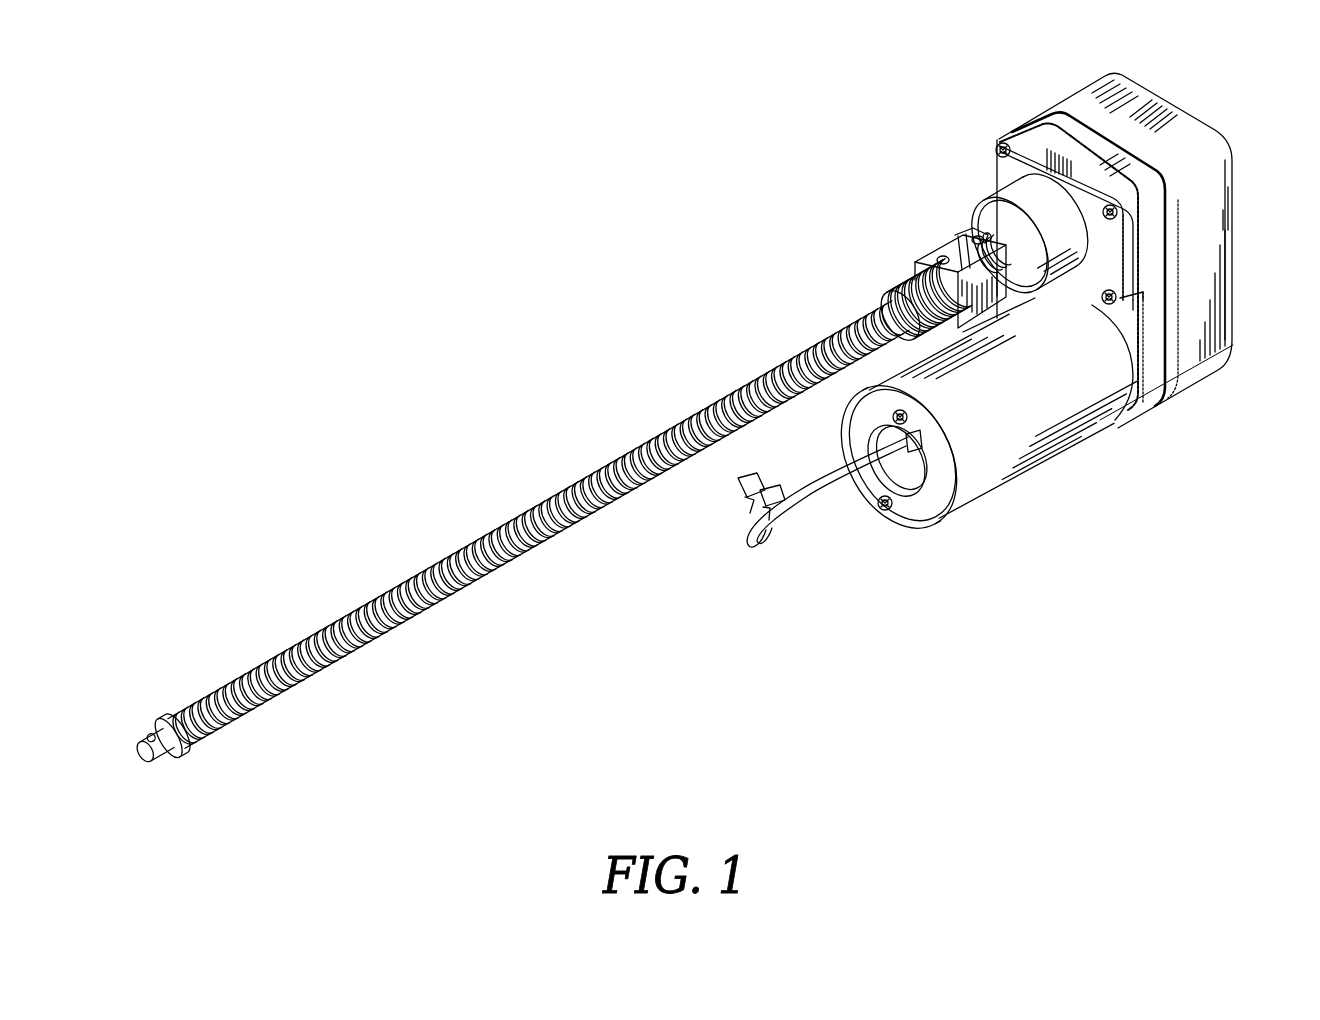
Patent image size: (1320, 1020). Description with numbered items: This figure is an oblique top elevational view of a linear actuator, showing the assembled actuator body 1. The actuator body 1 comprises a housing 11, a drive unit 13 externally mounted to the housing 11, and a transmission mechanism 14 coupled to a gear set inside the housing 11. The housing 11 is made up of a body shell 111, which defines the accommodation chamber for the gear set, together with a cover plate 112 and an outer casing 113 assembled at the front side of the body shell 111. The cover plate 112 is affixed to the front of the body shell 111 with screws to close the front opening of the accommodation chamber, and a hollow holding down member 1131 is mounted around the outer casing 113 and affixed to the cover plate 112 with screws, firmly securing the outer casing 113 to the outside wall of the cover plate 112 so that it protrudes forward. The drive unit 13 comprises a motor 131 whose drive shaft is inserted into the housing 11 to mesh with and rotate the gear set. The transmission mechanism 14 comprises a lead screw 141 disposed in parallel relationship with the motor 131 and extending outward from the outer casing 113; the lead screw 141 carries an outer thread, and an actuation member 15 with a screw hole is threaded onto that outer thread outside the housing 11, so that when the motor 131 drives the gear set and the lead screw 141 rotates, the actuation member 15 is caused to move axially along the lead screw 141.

The actuator body 1 is at (1040, 88).
The housing 11 is at (1161, 66).
The body shell 111 is at (1195, 135).
The cover plate 112 is at (1152, 342).
The outer casing 113 is at (1023, 203).
The hollow holding down member 1131 is at (1013, 136).
The drive unit 13 is at (1051, 479).
The motor 131 is at (980, 485).
The transmission mechanism 14 is at (480, 473).
The lead screw 141 is at (507, 537).
The actuation member 15 is at (930, 261).